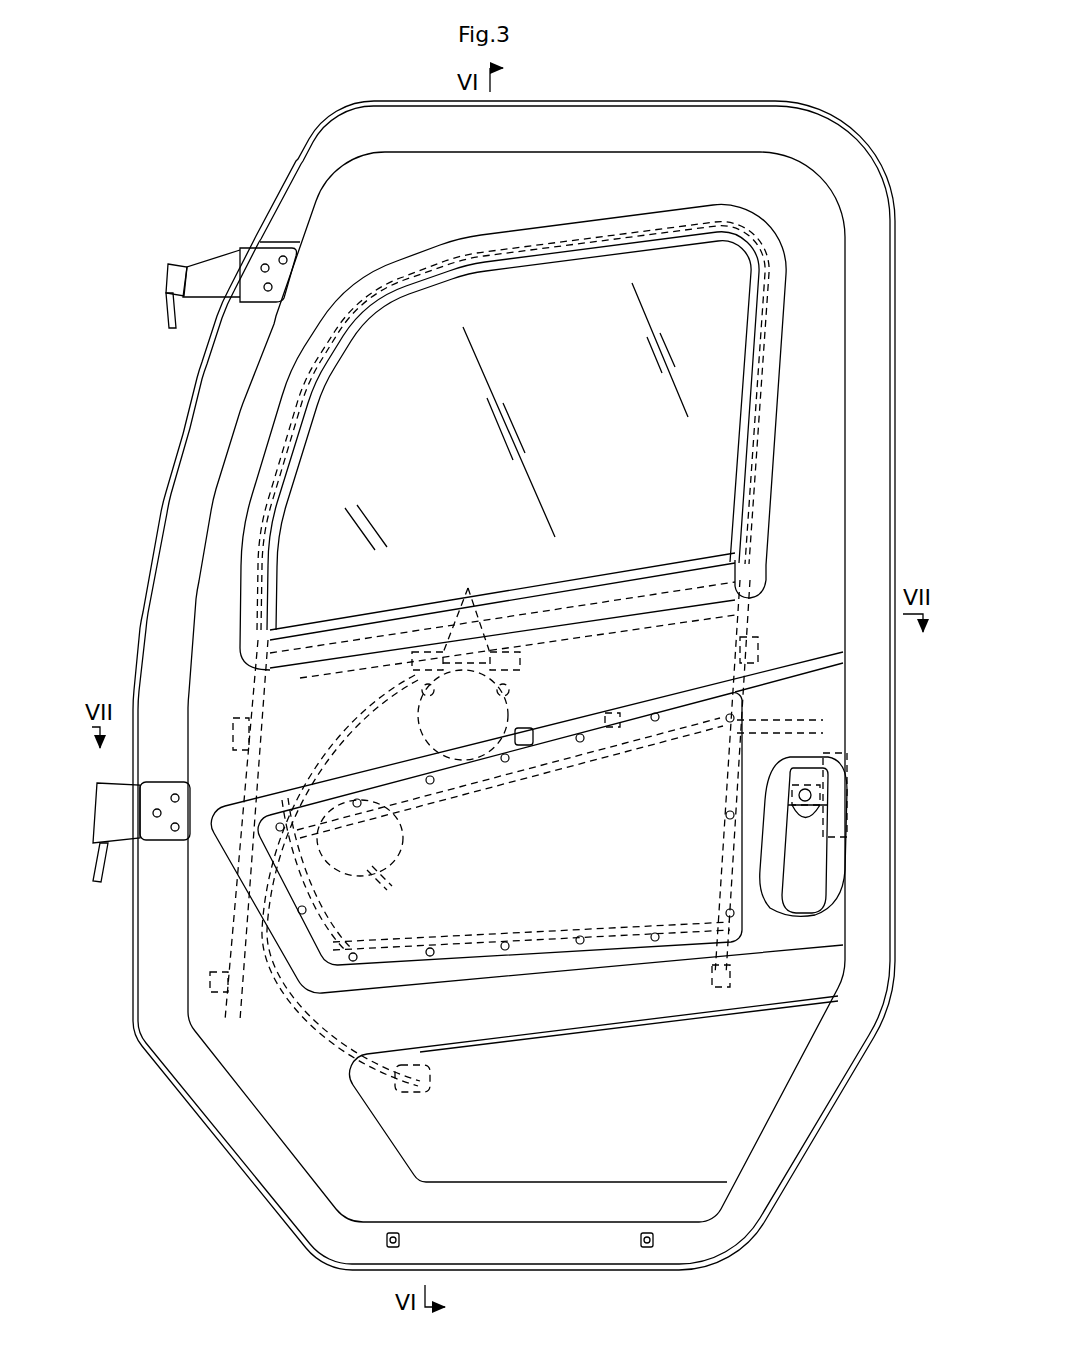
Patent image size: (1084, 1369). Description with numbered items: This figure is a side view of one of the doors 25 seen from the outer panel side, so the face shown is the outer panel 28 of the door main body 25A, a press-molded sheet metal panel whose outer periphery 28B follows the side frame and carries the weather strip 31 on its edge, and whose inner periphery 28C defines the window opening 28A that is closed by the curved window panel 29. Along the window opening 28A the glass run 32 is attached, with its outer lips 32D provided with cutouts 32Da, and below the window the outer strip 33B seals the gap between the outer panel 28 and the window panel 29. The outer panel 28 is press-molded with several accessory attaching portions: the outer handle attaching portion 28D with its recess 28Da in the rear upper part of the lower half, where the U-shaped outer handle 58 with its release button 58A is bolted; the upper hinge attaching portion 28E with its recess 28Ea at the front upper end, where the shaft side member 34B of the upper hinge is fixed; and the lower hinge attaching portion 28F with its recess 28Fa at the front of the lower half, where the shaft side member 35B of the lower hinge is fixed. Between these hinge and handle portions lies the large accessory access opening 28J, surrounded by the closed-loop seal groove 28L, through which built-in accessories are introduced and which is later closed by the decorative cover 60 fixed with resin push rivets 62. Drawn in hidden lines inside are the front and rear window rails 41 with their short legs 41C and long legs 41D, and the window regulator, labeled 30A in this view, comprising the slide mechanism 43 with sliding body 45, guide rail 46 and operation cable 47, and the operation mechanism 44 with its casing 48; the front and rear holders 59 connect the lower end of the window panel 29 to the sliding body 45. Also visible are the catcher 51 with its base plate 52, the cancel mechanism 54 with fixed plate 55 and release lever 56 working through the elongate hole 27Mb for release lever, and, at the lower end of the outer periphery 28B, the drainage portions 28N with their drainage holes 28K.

The door 25 is at (283, 110).
The door main body 25A is at (298, 160).
The elongate hole for release lever 27Mb is at (541, 692).
The outer panel 28 is at (267, 1093).
The window opening 28A is at (460, 290).
The outer periphery 28B is at (267, 1174).
The inner periphery 28C is at (545, 235).
The outer handle attaching portion 28D is at (840, 900).
The recess 28Da is at (786, 906).
The upper hinge attaching portion 28E is at (274, 243).
The recess 28Ea is at (305, 252).
The lower hinge attaching portion 28F is at (176, 781).
The recess 28Fa is at (165, 846).
The accessory access opening 28J is at (662, 947).
The drainage hole 28K is at (393, 1232).
The seal groove 28L is at (527, 834).
The drainage portion 28N is at (401, 1240).
The window panel 29 is at (620, 276).
The service hole 30A is at (488, 856).
The weather strip 31 is at (343, 117).
The glass run 32 is at (335, 372).
The outer lip 32D is at (315, 416).
The cutout 32Da is at (258, 656).
The outer strip 33B is at (580, 590).
The shaft side member 34B is at (160, 286).
The shaft side member 35B is at (158, 785).
The window rail 41 is at (747, 620).
The short leg 41C is at (760, 640).
The long leg 41D is at (718, 843).
The slide mechanism 43 is at (472, 799).
The operation mechanism 44 is at (392, 866).
The sliding body 45 is at (440, 727).
The guide rail 46 is at (452, 1068).
The operation cable 47 is at (350, 703).
The casing 48 is at (288, 800).
The catcher 51 is at (850, 738).
The base plate 52 is at (850, 802).
The cancel mechanism 54 is at (650, 758).
The fixed plate 55 is at (677, 745).
The release lever 56 is at (541, 727).
The outer handle 58 is at (820, 845).
The release button 58A is at (806, 788).
The holder 59 is at (468, 610).
The decorative cover 60 is at (562, 952).
The push rivet 62 is at (428, 956).